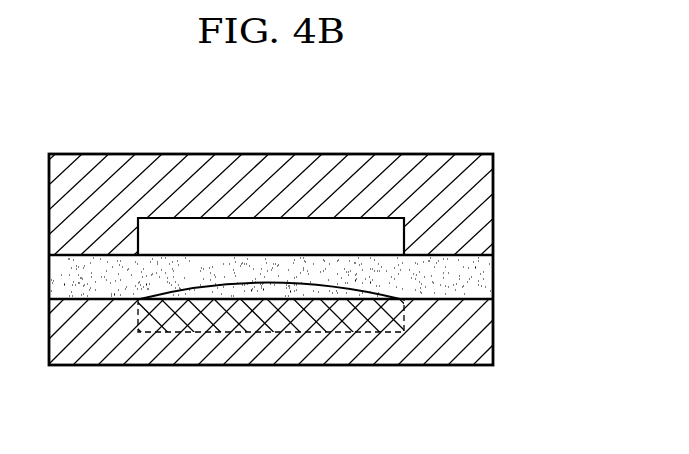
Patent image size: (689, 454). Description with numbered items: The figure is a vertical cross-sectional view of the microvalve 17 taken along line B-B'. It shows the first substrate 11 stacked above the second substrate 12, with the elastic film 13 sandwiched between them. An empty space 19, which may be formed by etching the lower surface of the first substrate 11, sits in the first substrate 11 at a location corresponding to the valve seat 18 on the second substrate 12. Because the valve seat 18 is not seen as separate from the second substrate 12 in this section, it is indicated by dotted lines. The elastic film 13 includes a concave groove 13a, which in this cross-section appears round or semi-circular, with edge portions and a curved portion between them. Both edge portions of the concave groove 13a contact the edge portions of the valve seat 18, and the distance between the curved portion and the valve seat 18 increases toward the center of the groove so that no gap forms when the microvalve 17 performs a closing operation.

The microvalve 17 is at (512, 153).
The first substrate 11 is at (494, 207).
The elastic film 13 is at (494, 278).
The concave groove 13a is at (275, 285).
The second substrate 12 is at (494, 333).
The valve seat 18 is at (270, 332).
The empty space 19 is at (335, 235).